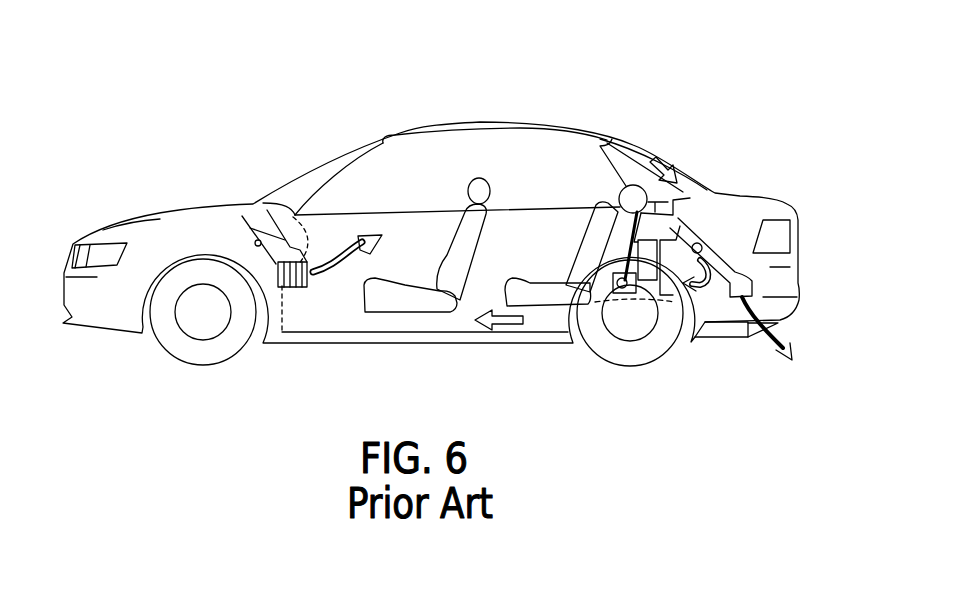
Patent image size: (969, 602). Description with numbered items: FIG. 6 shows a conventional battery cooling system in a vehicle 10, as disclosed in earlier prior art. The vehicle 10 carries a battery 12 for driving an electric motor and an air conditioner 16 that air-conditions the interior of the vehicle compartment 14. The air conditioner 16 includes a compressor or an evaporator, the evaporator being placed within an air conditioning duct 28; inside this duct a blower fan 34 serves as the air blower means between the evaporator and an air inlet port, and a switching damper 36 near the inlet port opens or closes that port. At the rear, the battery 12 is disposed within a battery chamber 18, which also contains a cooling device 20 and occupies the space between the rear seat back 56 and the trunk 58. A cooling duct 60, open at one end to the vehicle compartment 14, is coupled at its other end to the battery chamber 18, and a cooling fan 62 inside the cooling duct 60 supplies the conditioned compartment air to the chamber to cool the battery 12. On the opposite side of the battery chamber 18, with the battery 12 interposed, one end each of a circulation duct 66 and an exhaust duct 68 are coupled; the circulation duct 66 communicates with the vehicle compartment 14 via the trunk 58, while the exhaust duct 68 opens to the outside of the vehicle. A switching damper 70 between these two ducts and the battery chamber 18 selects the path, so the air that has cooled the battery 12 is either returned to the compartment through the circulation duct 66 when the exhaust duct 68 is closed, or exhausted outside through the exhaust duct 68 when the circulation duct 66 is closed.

The vehicle 10 is at (617, 97).
The battery 12 is at (655, 235).
The vehicle compartment 14 is at (545, 181).
The air conditioner 16 is at (338, 231).
The battery chamber 18 is at (647, 297).
The cooling device 20 is at (615, 322).
The air conditioning duct 28 is at (265, 255).
The blower fan 34 is at (306, 288).
The switching damper 36 is at (242, 206).
The rear seat back 56 is at (590, 253).
The trunk 58 is at (750, 223).
The cooling duct 60 is at (619, 199).
The cooling fan 62 is at (590, 280).
The circulation duct 66 is at (685, 272).
The exhaust duct 68 is at (722, 264).
The switching damper 70 is at (700, 236).